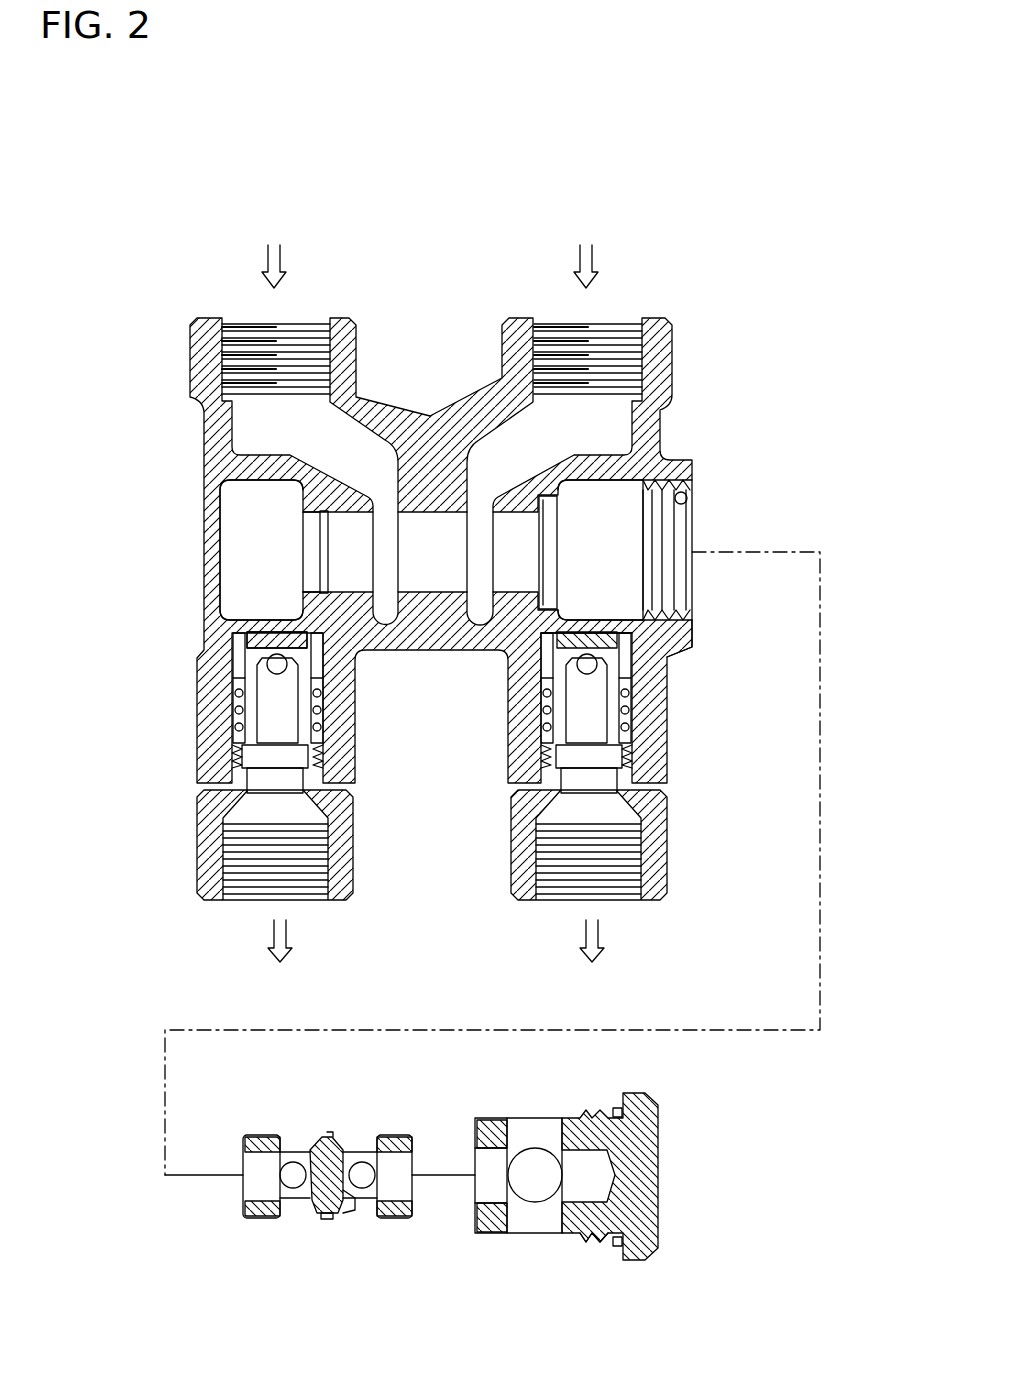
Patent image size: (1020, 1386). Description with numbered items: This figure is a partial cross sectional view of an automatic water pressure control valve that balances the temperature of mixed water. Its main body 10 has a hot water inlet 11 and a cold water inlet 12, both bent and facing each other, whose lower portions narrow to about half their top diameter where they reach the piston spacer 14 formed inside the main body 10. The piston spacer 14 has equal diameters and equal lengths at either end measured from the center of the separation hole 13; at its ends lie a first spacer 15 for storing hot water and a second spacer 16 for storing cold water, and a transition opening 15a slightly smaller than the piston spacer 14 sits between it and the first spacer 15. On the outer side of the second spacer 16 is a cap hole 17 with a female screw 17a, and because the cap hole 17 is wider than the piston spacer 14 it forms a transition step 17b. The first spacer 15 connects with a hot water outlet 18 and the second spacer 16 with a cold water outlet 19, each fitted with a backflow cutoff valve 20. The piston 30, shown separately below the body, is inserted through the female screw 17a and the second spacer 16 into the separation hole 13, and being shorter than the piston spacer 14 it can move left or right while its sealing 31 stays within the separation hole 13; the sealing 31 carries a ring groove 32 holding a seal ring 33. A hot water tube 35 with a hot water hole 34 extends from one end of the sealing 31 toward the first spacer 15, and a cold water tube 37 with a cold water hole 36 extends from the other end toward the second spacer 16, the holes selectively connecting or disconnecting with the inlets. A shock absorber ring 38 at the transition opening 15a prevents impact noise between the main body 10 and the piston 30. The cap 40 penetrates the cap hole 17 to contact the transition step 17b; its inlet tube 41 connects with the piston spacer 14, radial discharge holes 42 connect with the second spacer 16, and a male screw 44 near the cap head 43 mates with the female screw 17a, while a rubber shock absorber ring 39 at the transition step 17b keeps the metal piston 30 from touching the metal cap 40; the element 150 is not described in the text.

The main body 10 is at (187, 414).
The hot water inlet 11 is at (241, 337).
The cold water inlet 12 is at (620, 347).
The separation hole 13 is at (470, 512).
The piston spacer 14 is at (438, 536).
The first spacer 15 is at (237, 505).
The transition opening 15a is at (312, 579).
The second spacer 16 is at (623, 497).
The cap hole 17 is at (693, 531).
The female screw 17a is at (660, 488).
The transition step 17b is at (690, 652).
The hot water outlet 18 is at (276, 628).
The cold water outlet 19 is at (552, 614).
The backflow cutoff valve 20 is at (226, 722).
The piston 30 is at (322, 1205).
The sealing 31 is at (319, 1147).
The ring groove 32 is at (342, 1208).
The seal ring 33 is at (326, 1212).
The hot water hole 34 is at (291, 1148).
The hot water tube 35 is at (250, 1189).
The cold water hole 36 is at (360, 1148).
The cold water tube 37 is at (398, 1208).
The shock absorber ring 38 is at (303, 523).
The shock absorber ring 39 is at (548, 578).
The cap 40 is at (638, 1229).
The inlet tube 41 is at (490, 1186).
The discharge holes 42 is at (533, 1220).
The cap head 43 is at (650, 1127).
The male screw 44 is at (590, 1245).
The O-ring 150 is at (617, 1248).